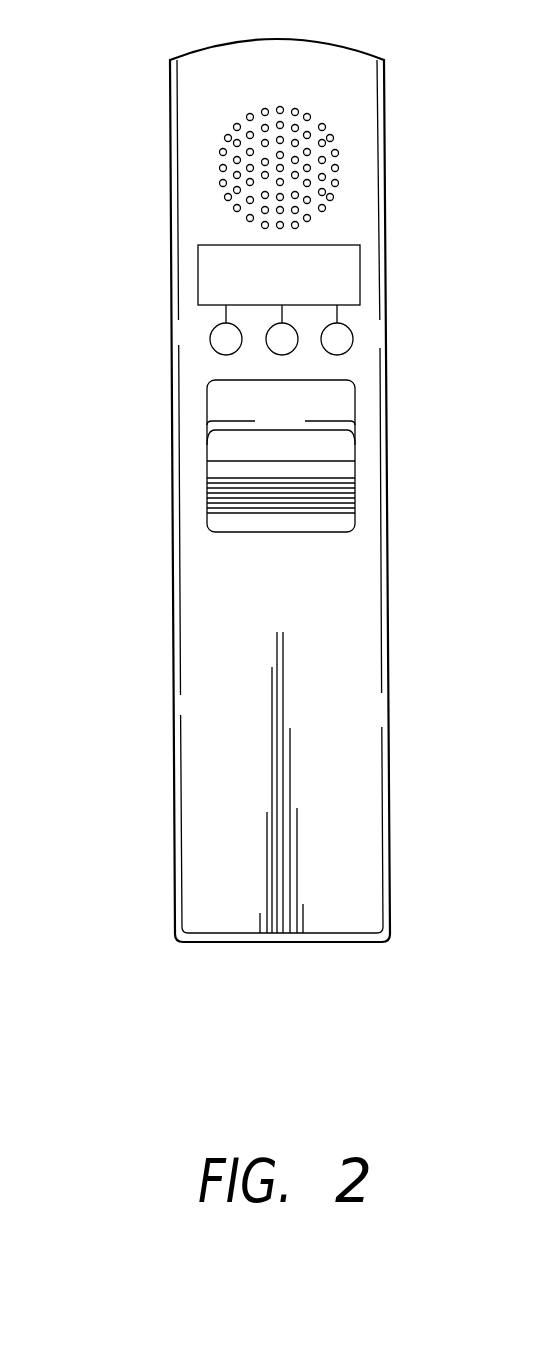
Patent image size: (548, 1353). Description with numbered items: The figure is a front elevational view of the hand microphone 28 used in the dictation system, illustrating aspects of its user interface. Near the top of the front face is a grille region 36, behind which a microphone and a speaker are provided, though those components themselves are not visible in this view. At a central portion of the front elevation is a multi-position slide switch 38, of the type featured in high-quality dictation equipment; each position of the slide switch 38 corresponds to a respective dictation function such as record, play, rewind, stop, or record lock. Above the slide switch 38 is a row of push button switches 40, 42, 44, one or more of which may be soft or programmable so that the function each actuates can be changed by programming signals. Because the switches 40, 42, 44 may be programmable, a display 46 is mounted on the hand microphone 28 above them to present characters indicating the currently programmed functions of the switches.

The hand microphone 28 is at (190, 52).
The grille region 36 is at (346, 163).
The multi-position slide switch 38 is at (357, 464).
The push button switch 40 is at (210, 339).
The push button switch 42 is at (293, 351).
The push button switch 44 is at (353, 336).
The display 46 is at (208, 245).